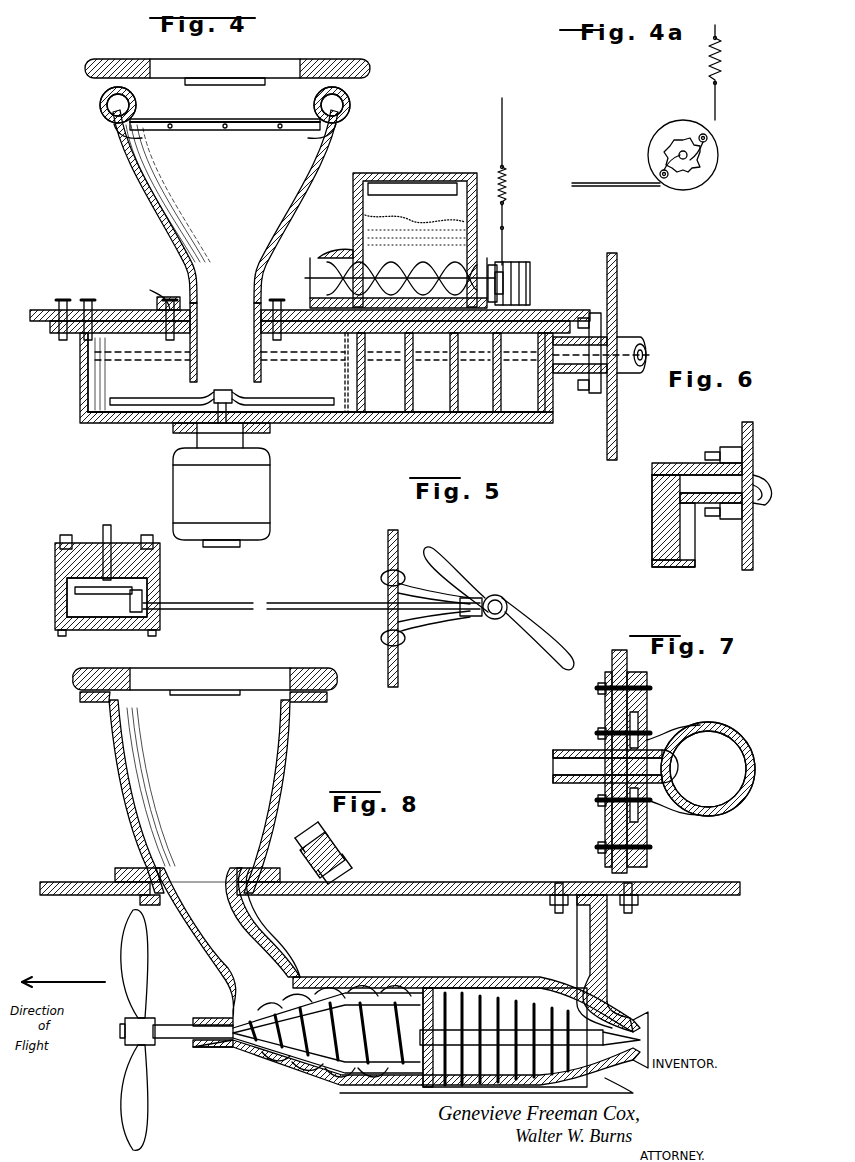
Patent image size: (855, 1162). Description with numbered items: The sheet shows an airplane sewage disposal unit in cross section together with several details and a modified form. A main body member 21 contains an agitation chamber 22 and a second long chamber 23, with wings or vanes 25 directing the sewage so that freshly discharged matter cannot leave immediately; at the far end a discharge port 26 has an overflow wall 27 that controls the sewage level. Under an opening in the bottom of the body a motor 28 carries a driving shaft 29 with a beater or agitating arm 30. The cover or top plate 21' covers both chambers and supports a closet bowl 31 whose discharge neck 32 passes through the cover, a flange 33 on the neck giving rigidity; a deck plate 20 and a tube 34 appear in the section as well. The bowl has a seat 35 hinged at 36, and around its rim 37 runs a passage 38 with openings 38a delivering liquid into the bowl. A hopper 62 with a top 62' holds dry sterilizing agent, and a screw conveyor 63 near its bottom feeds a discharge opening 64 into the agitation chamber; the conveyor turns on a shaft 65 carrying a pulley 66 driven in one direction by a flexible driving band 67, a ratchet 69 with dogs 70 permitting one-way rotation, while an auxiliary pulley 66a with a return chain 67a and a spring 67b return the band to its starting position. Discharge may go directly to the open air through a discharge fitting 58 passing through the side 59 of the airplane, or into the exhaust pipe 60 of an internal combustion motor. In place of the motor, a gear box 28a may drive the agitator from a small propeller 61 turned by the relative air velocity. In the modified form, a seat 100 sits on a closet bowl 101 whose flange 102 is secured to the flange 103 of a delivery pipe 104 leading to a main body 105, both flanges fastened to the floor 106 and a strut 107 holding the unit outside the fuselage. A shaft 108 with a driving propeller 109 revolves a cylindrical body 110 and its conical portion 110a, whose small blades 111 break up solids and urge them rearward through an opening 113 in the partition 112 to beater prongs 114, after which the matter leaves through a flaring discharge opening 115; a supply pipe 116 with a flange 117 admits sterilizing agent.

In FIG. 4, the deck plate 20 is at (48, 310).
In FIG. 4, the main body member 21 is at (299, 378).
In FIG. 6, the main body member 21 is at (673, 579).
In FIG. 4, the cover or top plate 21' is at (322, 305).
In FIG. 6, the cover or top plate 21' is at (662, 450).
In FIG. 4, the agitation chamber 22 is at (300, 420).
In FIG. 4, the second chamber (long passage) 23 is at (395, 410).
In FIG. 4, the wings or vanes 25 is at (375, 398).
In FIG. 4, the discharge port 26 is at (600, 378).
In FIG. 6, the discharge port 26 is at (700, 460).
In FIG. 7, the discharge port 26 is at (575, 765).
In FIG. 4, the overflow wall 27 is at (550, 405).
In FIG. 6, the overflow wall 27 is at (666, 520).
In FIG. 4, the motor 28 is at (272, 497).
In FIG. 5, the gear box 28a is at (56, 598).
In FIG. 4, the driving shaft 29 is at (210, 430).
In FIG. 5, the driving shaft 29 is at (104, 540).
In FIG. 4, the beater or agitating arm 30 is at (150, 405).
In FIG. 4, the closet bowl 31 is at (165, 185).
In FIG. 4, the discharge neck 32 is at (205, 355).
In FIG. 4, the flange 33 is at (160, 290).
In FIG. 4, the funnel tube 34 is at (228, 340).
In FIG. 4, the seat 35 is at (305, 67).
In FIG. 4, the hinge 36 is at (232, 78).
In FIG. 4, the rim 37 is at (250, 112).
In FIG. 4, the passage 38 is at (105, 110).
In FIG. 4, the openings 38a is at (114, 130).
In FIG. 4, the discharge fitting 58 is at (622, 342).
In FIG. 6, the discharge fitting 58 is at (760, 478).
In FIG. 7, the discharge fitting 58 is at (665, 768).
In FIG. 4, the side of the airplane 59 is at (620, 286).
In FIG. 6, the side of the airplane 59 is at (755, 540).
In FIG. 5, the side of the airplane 59 is at (388, 585).
In FIG. 7, the side of the airplane 59 is at (630, 668).
In FIG. 7, the exhaust pipe 60 is at (725, 808).
In FIG. 5, the small propeller 61 is at (472, 580).
In FIG. 4, the hopper 62 is at (391, 226).
In FIG. 4, the hopper top 62' is at (415, 224).
In FIG. 4, the screw conveyor 63 is at (352, 252).
In FIG. 4, the discharge opening 64 is at (330, 298).
In FIG. 4, the shaft 65 is at (325, 275).
In FIG. 4, the pulley 66 is at (533, 275).
In FIG. 4a, the pulley 66 is at (712, 172).
In FIG. 4, the auxiliary pulley 66a is at (500, 265).
In FIG. 4, the flexible driving band 67 is at (522, 262).
In FIG. 4a, the flexible driving band 67 is at (618, 186).
In FIG. 4, the return chain 67a is at (506, 228).
In FIG. 4, the spring 67b is at (510, 172).
In FIG. 4a, the spring 67b is at (726, 58).
In FIG. 4a, the ratchet 69 is at (680, 142).
In FIG. 4a, the dogs 70 is at (710, 140).
In FIG. 8, the seat 100 is at (210, 680).
In FIG. 8, the closet bowl 101 is at (268, 750).
In FIG. 8, the flange 102 is at (120, 868).
In FIG. 8, the flange 103 is at (140, 900).
In FIG. 8, the delivery pipe 104 is at (200, 962).
In FIG. 8, the main body 105 is at (380, 977).
In FIG. 8, the floor 106 is at (58, 882).
In FIG. 8, the strut 107 is at (608, 963).
In FIG. 8, the shaft 108 is at (180, 1040).
In FIG. 8, the driving propeller 109 is at (133, 1113).
In FIG. 8, the cylindrical body 110 is at (312, 1068).
In FIG. 8, the conical portion 110a is at (255, 1062).
In FIG. 8, the small blades 111 is at (370, 1093).
In FIG. 8, the partition 112 is at (430, 1010).
In FIG. 8, the opening 113 is at (470, 1008).
In FIG. 8, the beater prongs 114 is at (535, 1010).
In FIG. 8, the discharge opening 115 is at (652, 1040).
In FIG. 8, the supply pipe 116 is at (300, 915).
In FIG. 8, the flange 117 is at (338, 848).